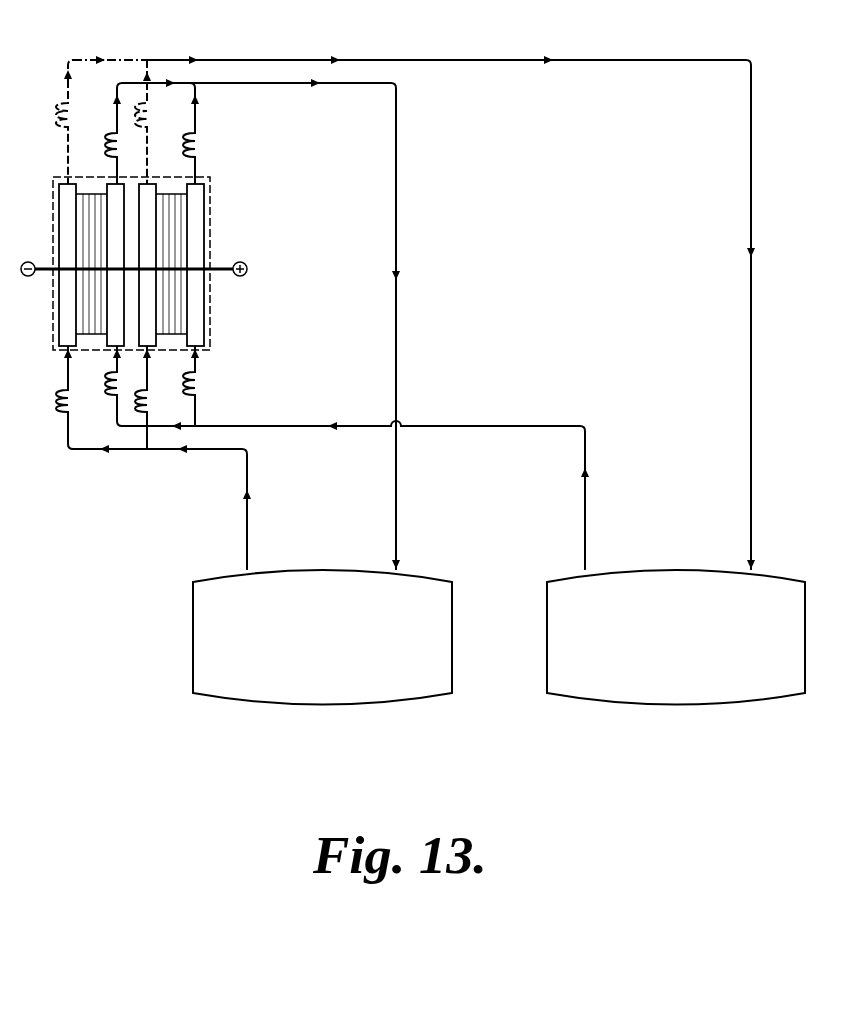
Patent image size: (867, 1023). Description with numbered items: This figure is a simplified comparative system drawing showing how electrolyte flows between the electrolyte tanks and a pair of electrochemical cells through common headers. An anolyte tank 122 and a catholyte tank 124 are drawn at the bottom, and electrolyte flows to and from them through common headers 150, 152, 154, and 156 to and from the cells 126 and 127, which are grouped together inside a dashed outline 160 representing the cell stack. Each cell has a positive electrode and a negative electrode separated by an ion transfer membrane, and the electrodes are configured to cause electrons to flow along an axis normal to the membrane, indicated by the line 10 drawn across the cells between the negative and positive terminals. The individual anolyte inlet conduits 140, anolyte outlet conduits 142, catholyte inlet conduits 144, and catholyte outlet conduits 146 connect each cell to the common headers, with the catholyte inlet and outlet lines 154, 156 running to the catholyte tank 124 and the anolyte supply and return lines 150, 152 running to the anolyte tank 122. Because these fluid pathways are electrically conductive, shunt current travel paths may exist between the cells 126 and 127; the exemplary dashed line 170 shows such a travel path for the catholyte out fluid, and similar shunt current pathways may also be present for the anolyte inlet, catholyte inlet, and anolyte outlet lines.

The line 10 is at (217, 266).
The anolyte tank 122 is at (326, 570).
The catholyte tank 124 is at (678, 570).
The cell 126 is at (57, 298).
The second electrochemical cell 127 is at (208, 312).
The anolyte inlet conduit 140 is at (67, 378).
The anolyte outlet conduit 142 is at (114, 163).
The catholyte inlet conduit 144 is at (116, 368).
The catholyte outlet conduit 146 is at (67, 163).
The common header 150 is at (89, 452).
The common header 152 is at (161, 83).
The common header 154 is at (190, 429).
The common header 156 is at (90, 60).
The cell stack 160 is at (210, 285).
The dashed line 170 is at (66, 72).